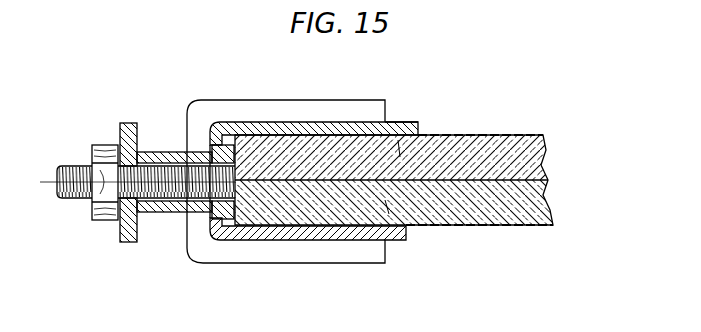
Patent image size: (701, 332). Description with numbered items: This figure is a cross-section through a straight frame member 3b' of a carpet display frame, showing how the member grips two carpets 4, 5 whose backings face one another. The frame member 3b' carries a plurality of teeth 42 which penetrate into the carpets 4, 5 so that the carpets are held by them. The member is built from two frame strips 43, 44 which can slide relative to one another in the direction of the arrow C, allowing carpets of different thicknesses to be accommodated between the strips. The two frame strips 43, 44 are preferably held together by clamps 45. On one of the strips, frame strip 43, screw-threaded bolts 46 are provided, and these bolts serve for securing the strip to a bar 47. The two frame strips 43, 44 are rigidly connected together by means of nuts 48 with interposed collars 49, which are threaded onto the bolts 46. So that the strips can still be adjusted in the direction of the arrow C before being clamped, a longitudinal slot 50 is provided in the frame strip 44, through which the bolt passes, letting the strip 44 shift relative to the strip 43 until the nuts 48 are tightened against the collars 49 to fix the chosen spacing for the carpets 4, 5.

The straight frame member 3b' is at (441, 92).
The carpet 4 is at (482, 148).
The carpet 5 is at (483, 210).
The teeth 42 is at (387, 208).
The frame strip 43 is at (250, 126).
The frame strip 44 is at (274, 238).
The clamp 45 is at (326, 256).
The screw-threaded bolt 46 is at (156, 214).
The bar 47 is at (128, 220).
The nut 48 is at (104, 156).
The collar 49 is at (160, 150).
The longitudinal slot 50 is at (210, 222).
The arrow C' C is at (573, 162).